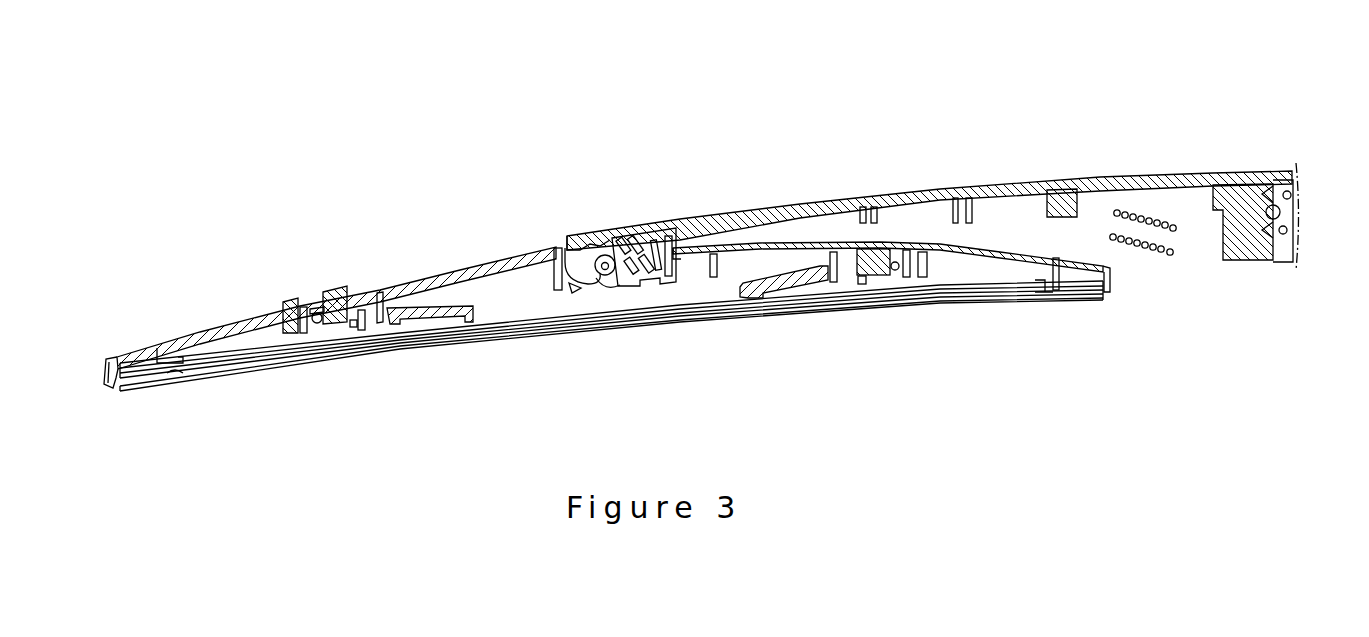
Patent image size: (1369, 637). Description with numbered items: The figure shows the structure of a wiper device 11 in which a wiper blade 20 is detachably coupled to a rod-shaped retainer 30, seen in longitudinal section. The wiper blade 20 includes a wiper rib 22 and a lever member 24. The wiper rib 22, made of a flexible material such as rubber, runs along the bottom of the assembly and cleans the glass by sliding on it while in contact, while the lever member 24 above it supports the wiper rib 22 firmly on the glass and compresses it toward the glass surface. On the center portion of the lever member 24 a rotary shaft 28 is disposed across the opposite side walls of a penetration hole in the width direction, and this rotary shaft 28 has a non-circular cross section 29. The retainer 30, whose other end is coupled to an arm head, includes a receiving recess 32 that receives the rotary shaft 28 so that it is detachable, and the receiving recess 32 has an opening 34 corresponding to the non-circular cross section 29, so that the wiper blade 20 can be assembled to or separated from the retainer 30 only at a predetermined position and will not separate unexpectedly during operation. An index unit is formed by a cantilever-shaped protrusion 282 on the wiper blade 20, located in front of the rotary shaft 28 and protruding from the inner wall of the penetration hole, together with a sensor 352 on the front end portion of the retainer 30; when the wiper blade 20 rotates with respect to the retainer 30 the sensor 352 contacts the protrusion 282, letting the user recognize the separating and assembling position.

The wiper device 11 is at (727, 138).
The wiper blade 20 is at (413, 263).
The wiper rib 22 is at (504, 340).
The lever member 24 is at (451, 262).
The rotary shaft 28 is at (608, 258).
The protrusion 282 is at (572, 292).
The non-circular cross section 29 is at (600, 278).
The retainer 30 is at (905, 187).
The receiving recess 32 is at (613, 275).
The opening 34 is at (562, 280).
The sensor 352 is at (565, 240).